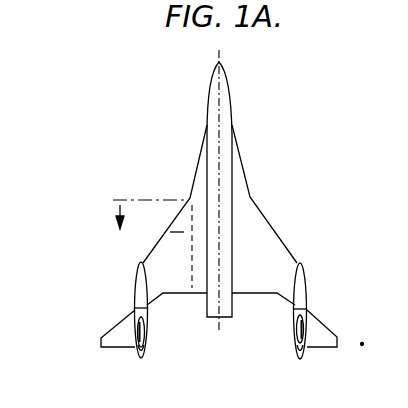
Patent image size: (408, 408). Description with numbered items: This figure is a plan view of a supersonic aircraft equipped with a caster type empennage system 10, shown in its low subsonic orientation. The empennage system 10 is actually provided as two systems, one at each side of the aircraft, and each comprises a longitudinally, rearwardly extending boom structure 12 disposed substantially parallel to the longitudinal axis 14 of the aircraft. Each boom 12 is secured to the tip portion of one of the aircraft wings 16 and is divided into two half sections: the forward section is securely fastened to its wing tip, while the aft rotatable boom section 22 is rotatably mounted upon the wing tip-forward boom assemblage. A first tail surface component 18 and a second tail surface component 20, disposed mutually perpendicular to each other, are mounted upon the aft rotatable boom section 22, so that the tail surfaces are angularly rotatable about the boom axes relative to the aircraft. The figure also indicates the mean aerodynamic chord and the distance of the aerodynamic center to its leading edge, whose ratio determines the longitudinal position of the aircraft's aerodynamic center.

The empennage system 10 is at (88, 310).
The boom structure 12 is at (138, 288).
The longitudinal axis 14 is at (219, 163).
The aircraft wing 16 is at (158, 285).
The first tail surface component 18 is at (115, 342).
The second tail surface component 20 is at (145, 330).
The aft rotatable boom section 22 is at (145, 352).